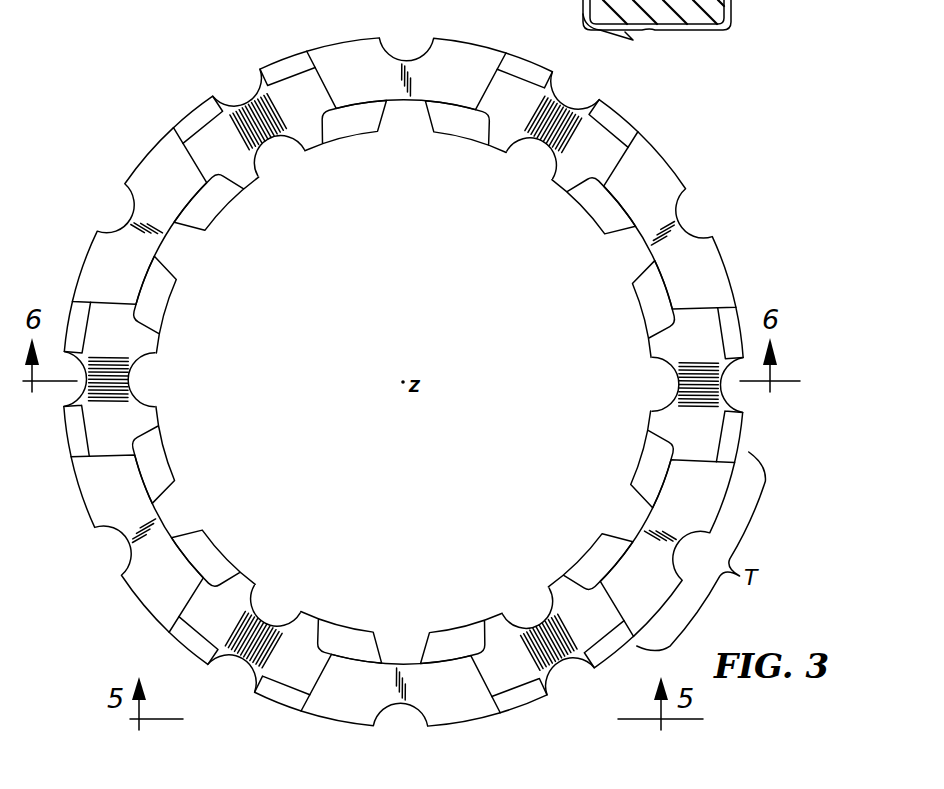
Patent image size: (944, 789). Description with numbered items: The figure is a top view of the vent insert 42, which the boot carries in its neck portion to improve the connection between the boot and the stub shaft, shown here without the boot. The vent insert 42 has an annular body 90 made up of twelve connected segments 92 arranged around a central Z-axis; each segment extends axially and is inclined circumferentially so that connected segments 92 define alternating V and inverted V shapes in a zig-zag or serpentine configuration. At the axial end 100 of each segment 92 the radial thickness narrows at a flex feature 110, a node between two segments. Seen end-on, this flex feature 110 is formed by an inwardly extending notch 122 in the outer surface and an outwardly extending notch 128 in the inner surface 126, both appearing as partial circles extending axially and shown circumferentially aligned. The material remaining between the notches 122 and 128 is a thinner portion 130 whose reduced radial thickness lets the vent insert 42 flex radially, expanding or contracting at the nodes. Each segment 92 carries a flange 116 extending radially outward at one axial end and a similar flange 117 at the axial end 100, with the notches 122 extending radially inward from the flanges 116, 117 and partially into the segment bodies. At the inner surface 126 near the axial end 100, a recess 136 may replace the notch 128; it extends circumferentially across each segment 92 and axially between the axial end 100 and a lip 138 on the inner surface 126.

The vent insert 42 is at (782, 238).
The annular body 90 is at (628, 452).
The segments 92 is at (458, 133).
The axial end 100 is at (362, 52).
The flex feature 110 is at (293, 97).
The flange 116 is at (625, 122).
The flange 117 is at (677, 167).
The notch 122 is at (261, 85).
The inner surface 126 is at (220, 213).
The notch 128 is at (273, 143).
The thinner portion 130 is at (545, 143).
The recess 136 is at (626, 190).
The lip 138 is at (647, 300).